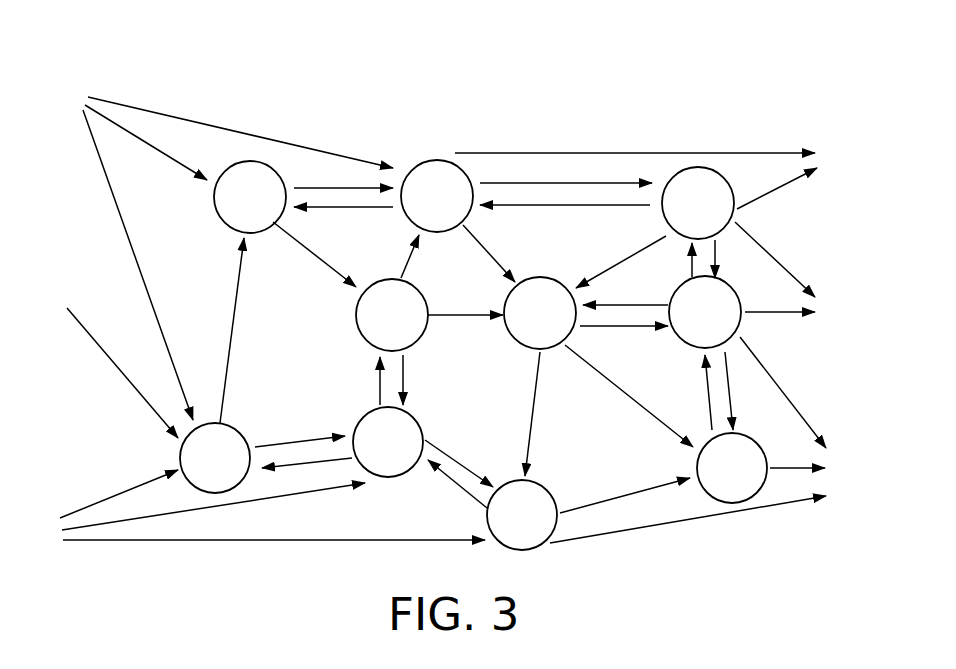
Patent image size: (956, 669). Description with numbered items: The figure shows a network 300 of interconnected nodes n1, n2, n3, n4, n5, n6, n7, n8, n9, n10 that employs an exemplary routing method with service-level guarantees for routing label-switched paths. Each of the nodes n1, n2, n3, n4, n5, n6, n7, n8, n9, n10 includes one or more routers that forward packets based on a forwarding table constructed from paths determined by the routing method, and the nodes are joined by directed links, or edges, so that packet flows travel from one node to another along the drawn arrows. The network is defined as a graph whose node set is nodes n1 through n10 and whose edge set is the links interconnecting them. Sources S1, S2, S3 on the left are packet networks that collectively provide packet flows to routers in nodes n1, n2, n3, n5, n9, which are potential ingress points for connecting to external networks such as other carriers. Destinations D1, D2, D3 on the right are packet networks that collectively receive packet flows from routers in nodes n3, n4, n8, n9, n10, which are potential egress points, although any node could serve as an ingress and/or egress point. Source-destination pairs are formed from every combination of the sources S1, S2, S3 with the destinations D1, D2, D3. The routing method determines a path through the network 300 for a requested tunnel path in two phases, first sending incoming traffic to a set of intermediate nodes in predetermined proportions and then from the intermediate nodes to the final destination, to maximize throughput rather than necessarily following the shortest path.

The network 300 is at (735, 95).
The node n1 is at (215, 458).
The node n2 is at (388, 442).
The node n3 is at (522, 515).
The node n4 is at (732, 468).
The node n5 is at (250, 197).
The node n6 is at (392, 315).
The node n7 is at (540, 313).
The node n8 is at (705, 312).
The node n9 is at (437, 196).
The node n10 is at (698, 203).
The source S1 is at (219, 247).
The source S2 is at (109, 351).
The source S3 is at (252, 508).
The destination D1 is at (657, 173).
The destination D2 is at (797, 276).
The destination D3 is at (709, 440).